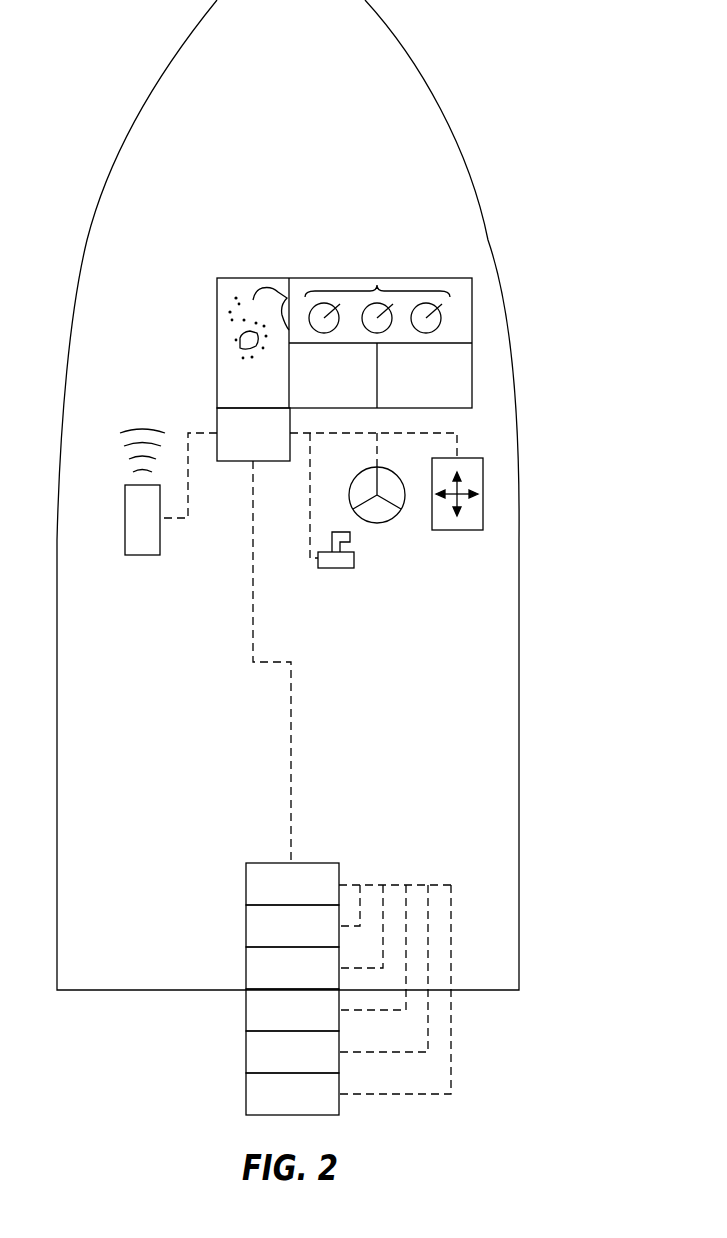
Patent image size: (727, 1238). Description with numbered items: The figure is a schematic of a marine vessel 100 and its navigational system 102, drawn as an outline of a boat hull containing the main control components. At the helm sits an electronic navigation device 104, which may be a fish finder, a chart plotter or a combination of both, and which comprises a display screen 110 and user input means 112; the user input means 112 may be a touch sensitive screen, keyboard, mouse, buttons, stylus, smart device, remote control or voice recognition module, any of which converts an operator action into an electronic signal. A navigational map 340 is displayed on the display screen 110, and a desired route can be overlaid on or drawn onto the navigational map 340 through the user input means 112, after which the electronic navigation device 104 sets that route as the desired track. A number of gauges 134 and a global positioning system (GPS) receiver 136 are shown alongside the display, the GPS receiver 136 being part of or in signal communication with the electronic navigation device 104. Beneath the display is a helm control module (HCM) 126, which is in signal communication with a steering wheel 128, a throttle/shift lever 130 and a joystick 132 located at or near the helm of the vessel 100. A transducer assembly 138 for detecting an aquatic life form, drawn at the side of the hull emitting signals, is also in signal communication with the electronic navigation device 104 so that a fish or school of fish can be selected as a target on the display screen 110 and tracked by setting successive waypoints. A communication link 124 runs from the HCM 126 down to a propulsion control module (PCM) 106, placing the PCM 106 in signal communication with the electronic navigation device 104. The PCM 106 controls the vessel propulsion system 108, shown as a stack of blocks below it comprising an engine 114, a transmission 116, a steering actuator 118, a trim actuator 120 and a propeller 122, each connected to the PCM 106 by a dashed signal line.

The marine vessel 100 is at (135, 106).
The navigational system 102 is at (488, 682).
The electronic navigation device 104 is at (213, 380).
The propulsion control module (PCM) 106 is at (246, 885).
The vessel propulsion system 108 is at (488, 945).
The display screen 110 is at (223, 305).
The user input means 112 is at (320, 397).
The engine 114 is at (246, 926).
The transmission 116 is at (246, 968).
The steering actuator 118 is at (246, 1010).
The trim actuator 120 is at (246, 1052).
The propeller 122 is at (246, 1094).
The communication link 124 is at (291, 760).
The helm control module (HCM) 126 is at (262, 452).
The steering wheel 128 is at (377, 523).
The throttle/shift lever 130 is at (335, 568).
The joystick 132 is at (483, 505).
The gauges 134 is at (377, 285).
The global positioning system (GPS) receiver 136 is at (455, 395).
The transducer assembly 138 is at (143, 555).
The navigational map 340 is at (230, 298).